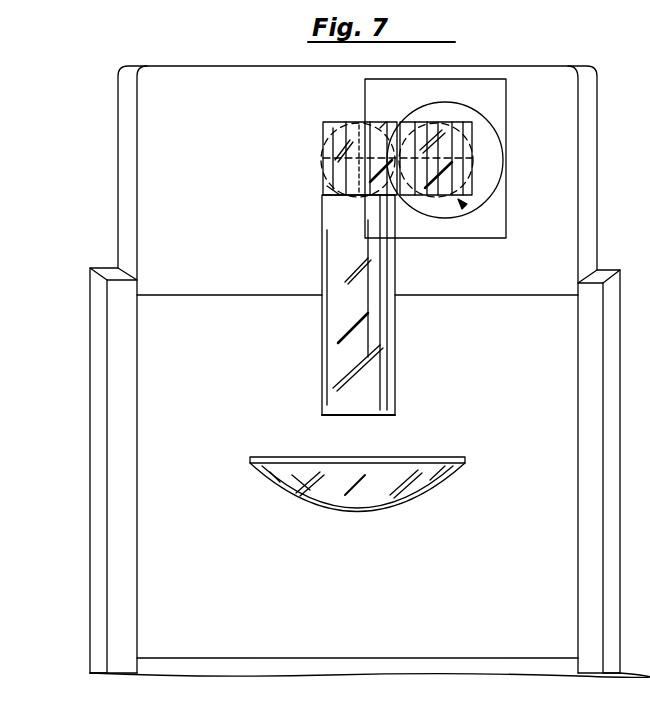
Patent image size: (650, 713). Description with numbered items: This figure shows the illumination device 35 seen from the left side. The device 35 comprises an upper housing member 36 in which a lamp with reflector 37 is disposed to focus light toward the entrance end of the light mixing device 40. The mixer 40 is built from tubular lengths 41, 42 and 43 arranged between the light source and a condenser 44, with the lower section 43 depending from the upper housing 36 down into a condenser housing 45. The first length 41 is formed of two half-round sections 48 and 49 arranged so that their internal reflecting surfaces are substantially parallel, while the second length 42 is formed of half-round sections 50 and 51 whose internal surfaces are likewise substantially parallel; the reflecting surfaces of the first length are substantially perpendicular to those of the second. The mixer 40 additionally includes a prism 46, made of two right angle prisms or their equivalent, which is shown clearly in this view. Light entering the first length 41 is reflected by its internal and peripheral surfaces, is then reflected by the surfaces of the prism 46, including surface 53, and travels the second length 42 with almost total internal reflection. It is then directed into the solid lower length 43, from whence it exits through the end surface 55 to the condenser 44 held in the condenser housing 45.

The device 35 is at (617, 150).
The upper housing member 36 is at (160, 131).
The lamp with reflector 37 is at (480, 109).
The mixing device 40 is at (287, 168).
The tubular length 41 is at (476, 182).
The tubular length 42 is at (334, 124).
The tubular length 43 is at (346, 260).
The condenser 44 is at (313, 470).
The condenser housing 45 is at (106, 490).
The prism 46 is at (462, 206).
The half-round section 48 is at (458, 128).
The half-round section 49 is at (420, 197).
The half-round section 50 is at (379, 130).
The half-round section 51 is at (332, 210).
The surface of prism 53 is at (340, 136).
The end surface 55 is at (340, 416).